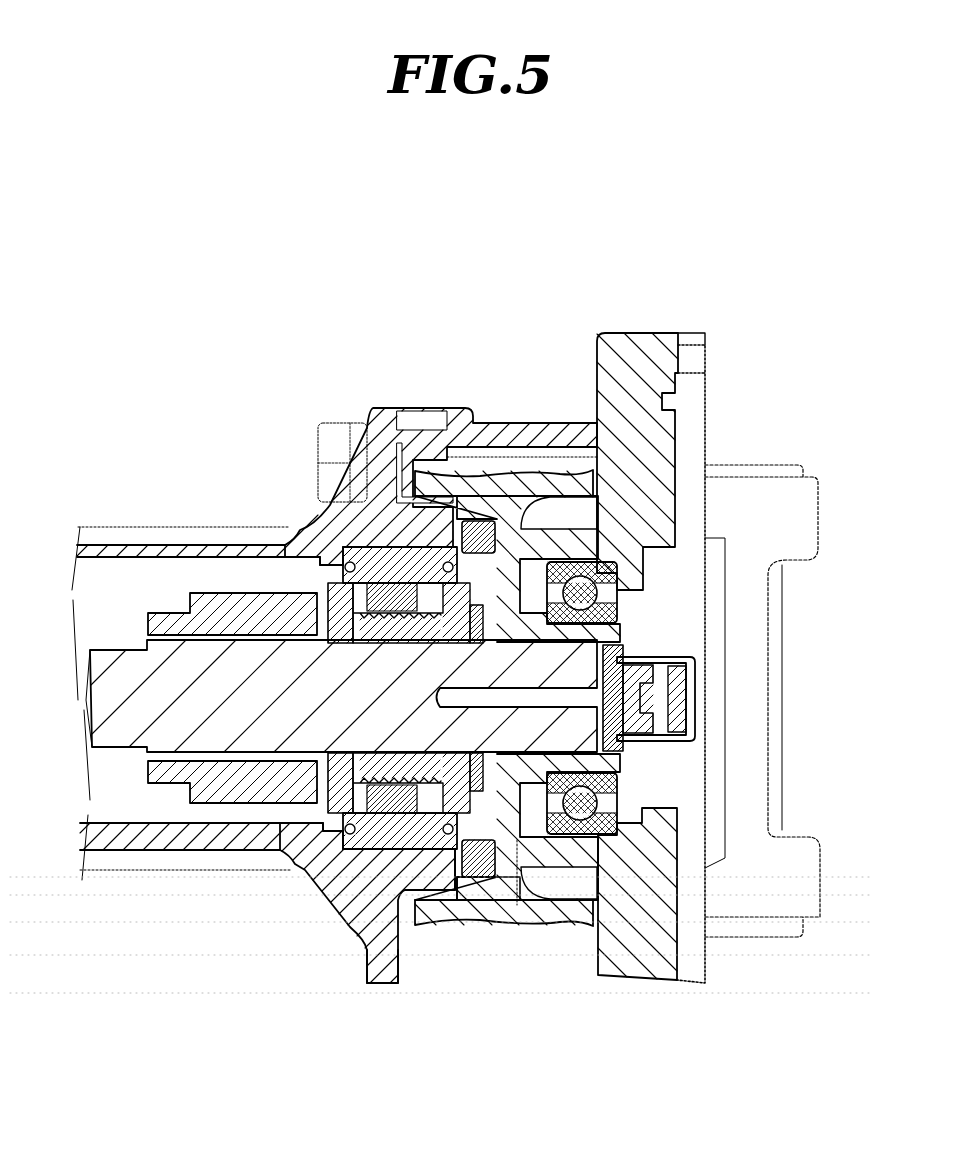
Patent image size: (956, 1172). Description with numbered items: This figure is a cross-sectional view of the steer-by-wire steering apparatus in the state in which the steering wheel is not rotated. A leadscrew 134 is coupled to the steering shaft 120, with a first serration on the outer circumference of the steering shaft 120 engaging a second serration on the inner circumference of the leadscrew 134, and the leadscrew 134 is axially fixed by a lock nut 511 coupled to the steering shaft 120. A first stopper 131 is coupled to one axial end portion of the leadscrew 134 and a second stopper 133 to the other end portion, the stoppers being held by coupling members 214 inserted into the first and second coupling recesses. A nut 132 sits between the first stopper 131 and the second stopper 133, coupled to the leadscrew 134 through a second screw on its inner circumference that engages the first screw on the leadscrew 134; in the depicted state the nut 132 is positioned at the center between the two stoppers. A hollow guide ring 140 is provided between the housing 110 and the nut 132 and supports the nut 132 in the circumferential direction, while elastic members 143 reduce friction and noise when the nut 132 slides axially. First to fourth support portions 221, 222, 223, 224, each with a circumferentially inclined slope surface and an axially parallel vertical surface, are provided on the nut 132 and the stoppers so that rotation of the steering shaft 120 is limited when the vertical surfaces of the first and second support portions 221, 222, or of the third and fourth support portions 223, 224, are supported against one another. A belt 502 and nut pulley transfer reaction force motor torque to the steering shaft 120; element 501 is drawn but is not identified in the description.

The housing 110 is at (126, 548).
The steering shaft 120 is at (105, 697).
The first stopper 131 is at (306, 532).
The nut 132 is at (358, 598).
The second stopper 133 is at (482, 880).
The leadscrew 134 is at (300, 852).
The guide ring 140 is at (445, 470).
The elastic members 143 is at (490, 527).
The coupling members 214 is at (303, 785).
The first support portion 221 is at (352, 560).
The second support portion 222 is at (333, 597).
The third support portion 223 is at (360, 930).
The fourth support portion 224 is at (443, 895).
The housing 501 is at (555, 910).
The belt 502 is at (527, 965).
The lock nut 511 is at (570, 628).